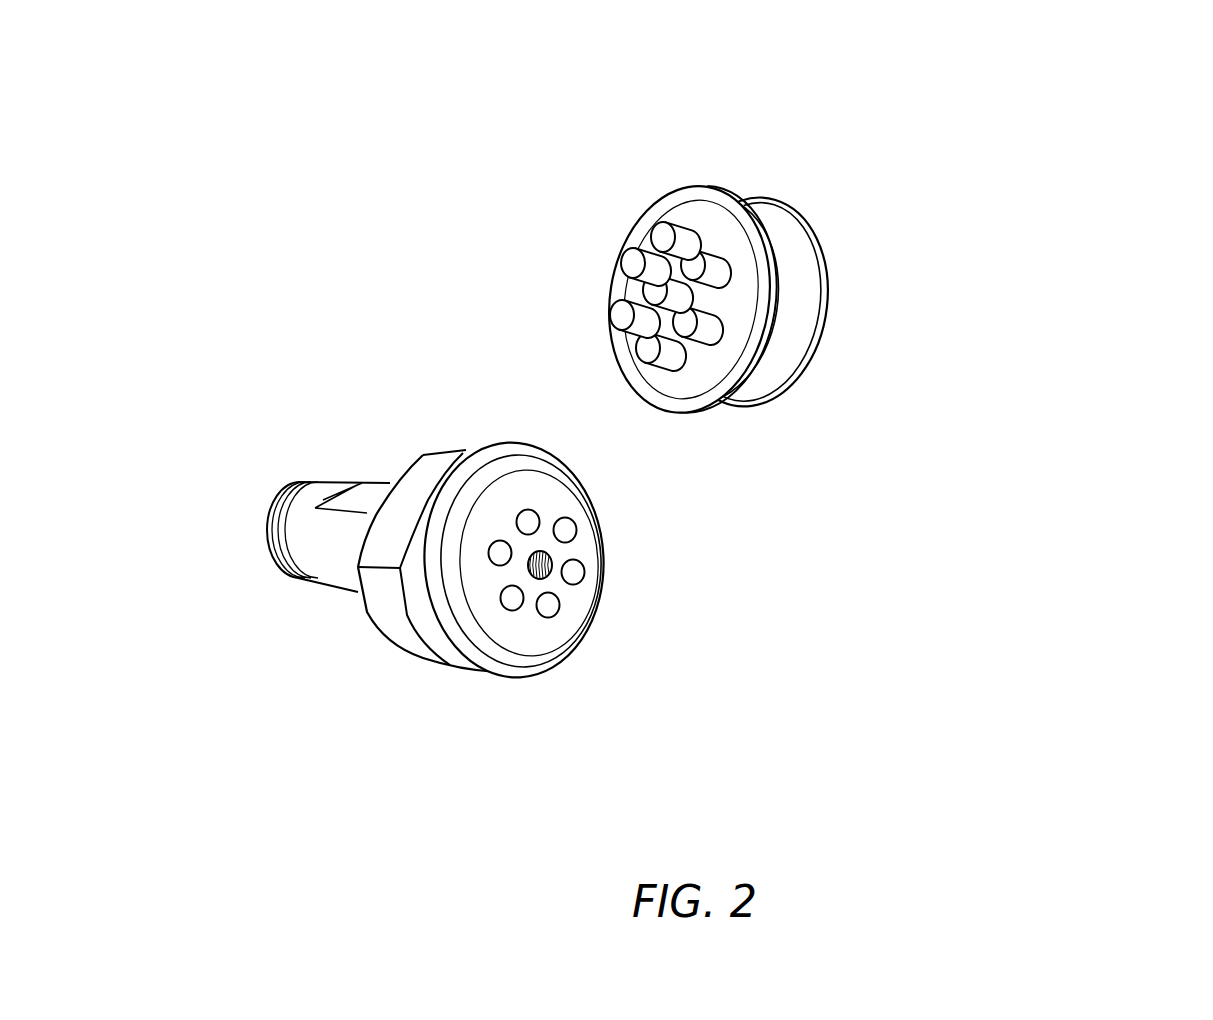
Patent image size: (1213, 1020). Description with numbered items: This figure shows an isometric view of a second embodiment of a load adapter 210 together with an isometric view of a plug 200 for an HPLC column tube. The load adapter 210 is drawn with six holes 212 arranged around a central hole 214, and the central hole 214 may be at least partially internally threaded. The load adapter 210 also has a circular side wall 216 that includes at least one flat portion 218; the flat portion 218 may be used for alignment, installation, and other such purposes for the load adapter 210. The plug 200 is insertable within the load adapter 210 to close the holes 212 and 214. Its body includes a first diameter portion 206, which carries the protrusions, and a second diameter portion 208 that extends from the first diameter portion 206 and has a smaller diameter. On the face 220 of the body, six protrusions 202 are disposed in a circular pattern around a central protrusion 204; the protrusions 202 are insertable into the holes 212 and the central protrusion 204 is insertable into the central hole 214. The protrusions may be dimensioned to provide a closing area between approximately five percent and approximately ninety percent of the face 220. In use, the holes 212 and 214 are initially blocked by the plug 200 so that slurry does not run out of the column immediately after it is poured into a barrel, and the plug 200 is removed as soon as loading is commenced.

The plug 200 is at (648, 202).
The protrusions 202 is at (902, 266).
The central protrusion 204 is at (667, 297).
The first diameter portion 206 is at (772, 233).
The second diameter portion 208 is at (807, 300).
The face 220 is at (707, 215).
The load adapter 210 is at (385, 425).
The holes 212 is at (497, 553).
The central hole 214 is at (535, 570).
The circular side wall 216 is at (382, 602).
The flat portion 218 is at (378, 542).